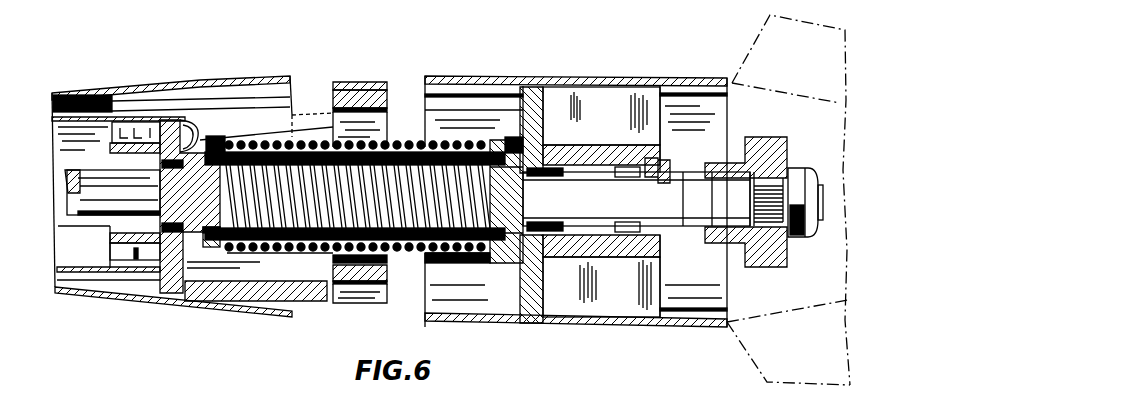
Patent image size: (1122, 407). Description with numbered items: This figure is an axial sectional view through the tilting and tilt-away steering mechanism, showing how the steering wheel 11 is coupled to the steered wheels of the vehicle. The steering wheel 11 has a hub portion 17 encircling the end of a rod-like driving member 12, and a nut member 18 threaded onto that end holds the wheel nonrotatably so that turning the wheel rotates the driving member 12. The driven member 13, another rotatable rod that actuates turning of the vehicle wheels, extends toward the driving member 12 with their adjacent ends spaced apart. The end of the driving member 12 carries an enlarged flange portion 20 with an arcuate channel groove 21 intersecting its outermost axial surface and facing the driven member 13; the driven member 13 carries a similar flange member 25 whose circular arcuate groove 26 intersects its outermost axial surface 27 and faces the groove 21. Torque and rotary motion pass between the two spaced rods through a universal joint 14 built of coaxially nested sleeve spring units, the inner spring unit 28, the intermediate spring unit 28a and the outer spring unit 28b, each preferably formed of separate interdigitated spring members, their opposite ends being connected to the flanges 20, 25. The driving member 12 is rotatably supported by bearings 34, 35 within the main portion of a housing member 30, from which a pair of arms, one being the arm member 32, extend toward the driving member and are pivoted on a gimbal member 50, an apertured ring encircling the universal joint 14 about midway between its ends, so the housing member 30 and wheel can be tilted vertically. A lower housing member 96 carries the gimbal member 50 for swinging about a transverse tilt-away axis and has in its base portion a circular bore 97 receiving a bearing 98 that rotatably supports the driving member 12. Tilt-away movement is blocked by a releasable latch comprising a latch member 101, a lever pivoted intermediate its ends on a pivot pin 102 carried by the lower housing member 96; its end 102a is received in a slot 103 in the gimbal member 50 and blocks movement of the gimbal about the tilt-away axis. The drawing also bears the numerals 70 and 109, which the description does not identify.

The steering wheel 11 is at (760, 348).
The driving member 12 is at (668, 213).
The driven member 13 is at (92, 242).
The universal joint 14 is at (431, 258).
The hub portion 17 is at (768, 143).
The nut member 18 is at (798, 240).
The enlarged flange portion 20 is at (515, 135).
The arcuate channel groove 21 is at (493, 143).
The flange member 25 is at (213, 136).
The circular arcuate groove 26 is at (228, 138).
The outermost axial surface 27 is at (225, 252).
The inner sleeve spring unit 28 is at (385, 147).
The intermediate sleeve spring unit 28a is at (352, 148).
The outer sleeve spring unit 28b is at (348, 82).
The housing member 30 is at (603, 78).
The arm member 32 is at (398, 255).
The bearing 34 is at (563, 157).
The bearing 35 is at (653, 157).
The gimbal member 50 is at (372, 303).
The assembly 70 is at (576, 163).
The lower housing member 96 is at (143, 250).
The circular bore 97 is at (135, 158).
The bearing 98 is at (150, 167).
The latch member 101 is at (105, 92).
The pivot pin 102 is at (192, 118).
The end of the lever 102a is at (360, 140).
The slot 103 is at (363, 82).
The outer shell 109 is at (153, 80).